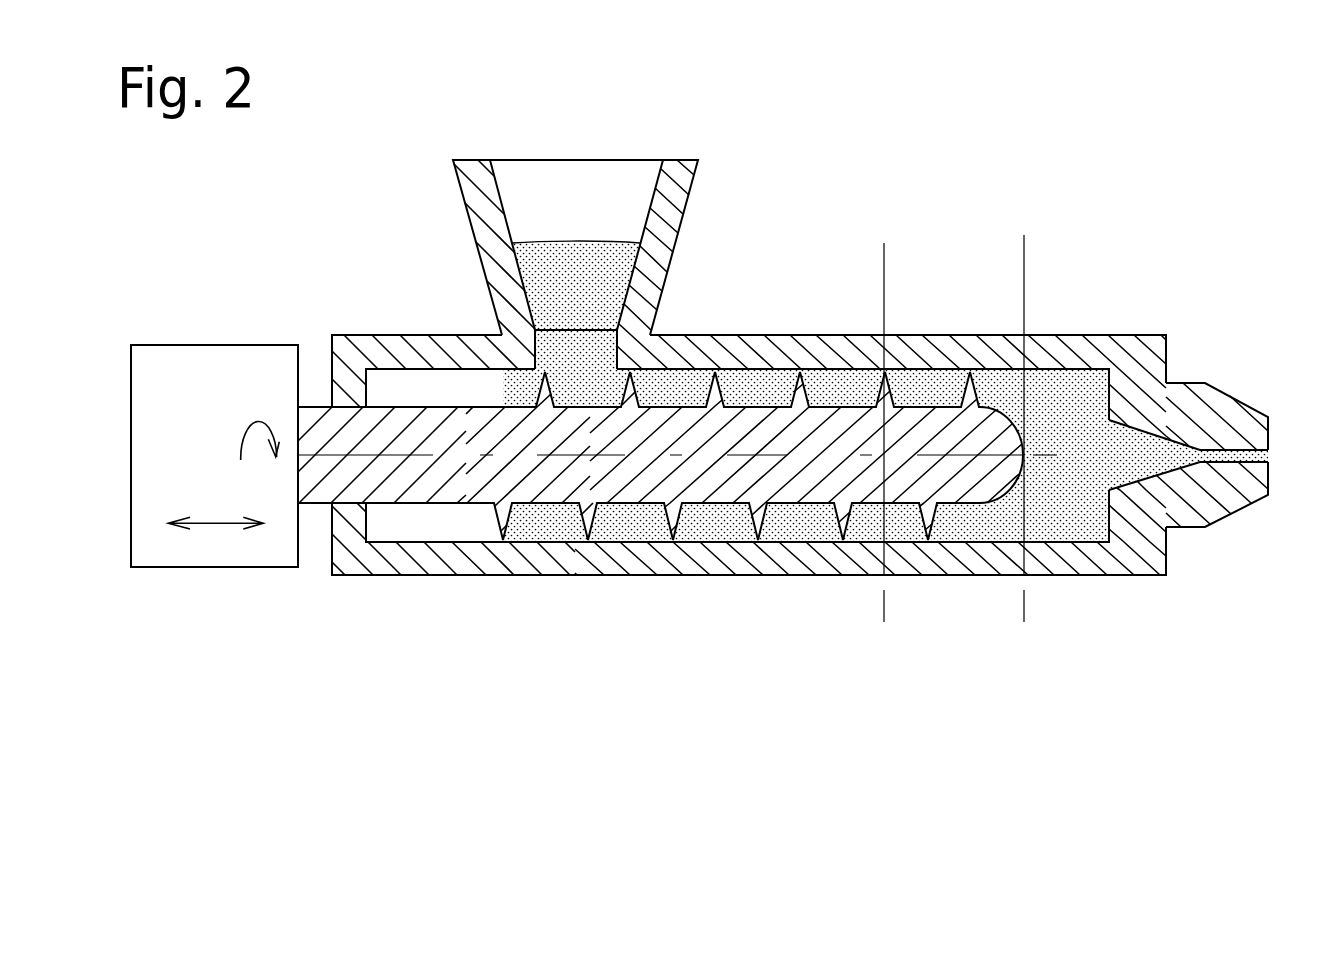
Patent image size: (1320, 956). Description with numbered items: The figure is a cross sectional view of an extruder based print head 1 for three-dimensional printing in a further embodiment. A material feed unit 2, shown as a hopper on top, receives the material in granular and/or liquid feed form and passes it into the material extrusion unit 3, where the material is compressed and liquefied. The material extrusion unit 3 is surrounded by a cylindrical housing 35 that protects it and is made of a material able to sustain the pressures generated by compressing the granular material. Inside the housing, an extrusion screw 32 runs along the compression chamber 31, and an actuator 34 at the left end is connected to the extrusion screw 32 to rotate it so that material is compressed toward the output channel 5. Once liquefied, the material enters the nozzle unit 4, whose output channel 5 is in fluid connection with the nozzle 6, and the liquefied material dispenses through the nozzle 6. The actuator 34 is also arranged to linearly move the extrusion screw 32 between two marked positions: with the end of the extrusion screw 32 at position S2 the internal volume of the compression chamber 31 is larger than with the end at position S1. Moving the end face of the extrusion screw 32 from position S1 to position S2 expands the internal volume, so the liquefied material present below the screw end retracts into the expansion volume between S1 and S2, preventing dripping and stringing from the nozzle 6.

The extruder based print head 1 is at (839, 119).
The material feed unit 2 is at (685, 172).
The material extrusion unit 3 is at (754, 302).
The compression chamber 31 is at (800, 520).
The extrusion screw 32 is at (413, 482).
The actuator 34 is at (202, 553).
The cylindrical housing 35 is at (563, 560).
The nozzle unit 4 is at (1257, 354).
The output channel 5 is at (1163, 457).
The nozzle 6 is at (1213, 505).
The position S1 is at (1024, 250).
The position S2 is at (885, 250).